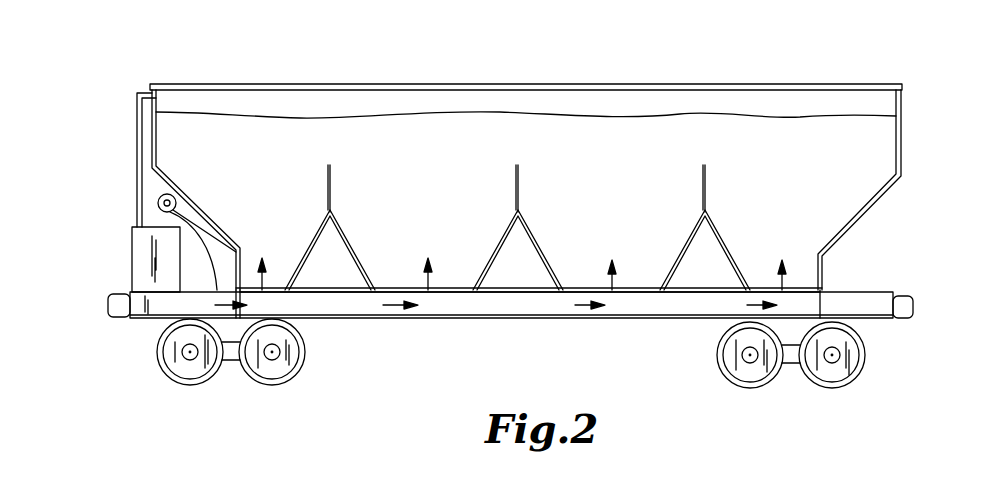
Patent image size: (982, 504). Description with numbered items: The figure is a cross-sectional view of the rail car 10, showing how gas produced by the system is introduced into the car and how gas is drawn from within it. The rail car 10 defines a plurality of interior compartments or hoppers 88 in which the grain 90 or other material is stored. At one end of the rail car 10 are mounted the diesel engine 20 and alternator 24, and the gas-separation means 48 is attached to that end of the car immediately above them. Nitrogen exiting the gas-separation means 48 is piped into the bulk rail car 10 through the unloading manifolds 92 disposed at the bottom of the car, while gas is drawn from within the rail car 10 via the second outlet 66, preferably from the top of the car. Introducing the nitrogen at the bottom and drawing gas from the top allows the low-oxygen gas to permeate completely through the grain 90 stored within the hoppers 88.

The rail car 10 is at (607, 73).
The grain 90 is at (783, 133).
The second outlet 66 is at (137, 110).
The gas-separation means 48 is at (158, 202).
The diesel engine 20 is at (156, 259).
The alternator 24 is at (156, 259).
The hoppers 88 is at (543, 266).
The unloading manifolds 92 is at (445, 293).